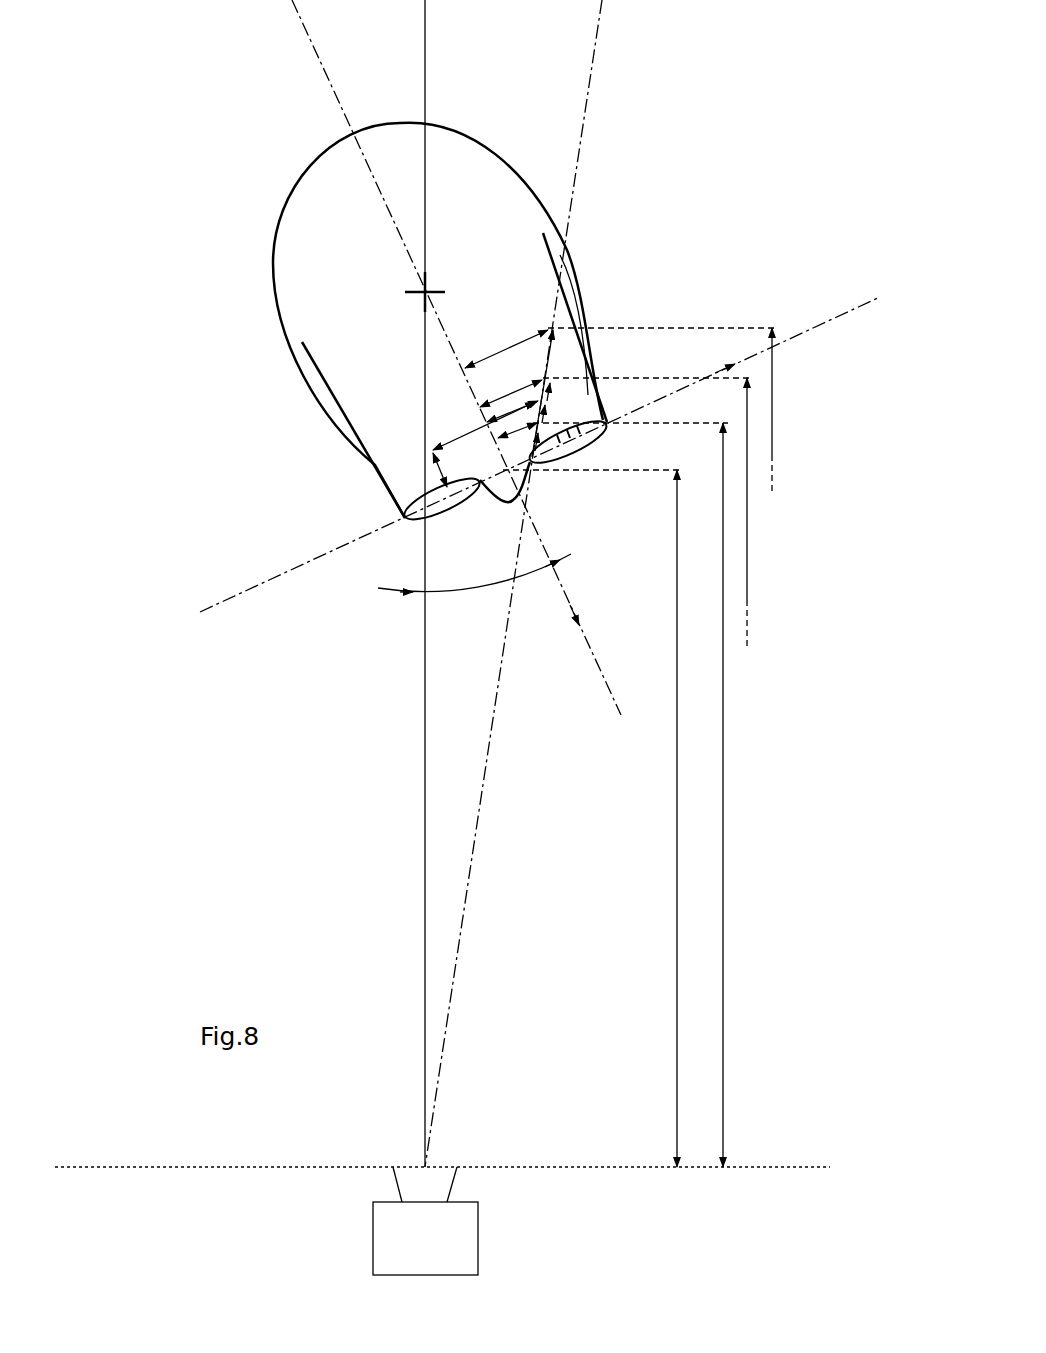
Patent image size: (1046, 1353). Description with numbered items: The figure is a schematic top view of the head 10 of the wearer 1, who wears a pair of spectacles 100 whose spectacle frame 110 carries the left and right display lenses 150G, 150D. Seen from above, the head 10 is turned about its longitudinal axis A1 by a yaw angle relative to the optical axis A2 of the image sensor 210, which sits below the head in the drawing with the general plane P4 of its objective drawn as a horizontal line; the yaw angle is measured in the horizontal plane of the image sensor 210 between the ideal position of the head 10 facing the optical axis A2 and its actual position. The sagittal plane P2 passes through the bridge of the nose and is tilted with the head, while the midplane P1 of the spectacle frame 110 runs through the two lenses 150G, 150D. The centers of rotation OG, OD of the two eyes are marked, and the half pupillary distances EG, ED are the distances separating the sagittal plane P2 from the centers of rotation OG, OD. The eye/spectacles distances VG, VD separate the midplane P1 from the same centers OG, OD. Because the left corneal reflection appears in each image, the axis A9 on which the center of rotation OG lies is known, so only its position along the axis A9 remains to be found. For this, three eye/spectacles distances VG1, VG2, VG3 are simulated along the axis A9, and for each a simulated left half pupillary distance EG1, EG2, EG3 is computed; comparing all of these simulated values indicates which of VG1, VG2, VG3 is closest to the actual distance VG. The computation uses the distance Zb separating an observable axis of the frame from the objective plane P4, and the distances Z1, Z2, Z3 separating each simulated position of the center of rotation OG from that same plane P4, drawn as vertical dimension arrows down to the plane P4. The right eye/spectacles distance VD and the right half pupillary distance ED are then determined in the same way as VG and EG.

The wearer 1 is at (690, 120).
The head 10 is at (508, 158).
The pair of spectacles 100 is at (562, 256).
The spectacle frame 110 is at (568, 293).
The image sensor 210 is at (480, 1250).
The right display lens 150D is at (412, 522).
The left display lens 150G is at (592, 432).
The midplane P1 is at (846, 316).
The sagittal plane P2 is at (318, 65).
The general plane of the objective P4 is at (798, 1168).
The longitudinal axis A1 is at (420, 295).
The optical axis A2 is at (424, 826).
The axis A9 is at (475, 828).
The center of rotation of the right eye OD is at (410, 484).
The center of rotation of the left eye OG is at (592, 330).
The right eye/spectacles distance VD is at (400, 488).
The left eye/spectacles distance VG is at (560, 450).
The first simulated eye/spectacles distance VG1 is at (600, 380).
The second simulated eye/spectacles distance VG2 is at (578, 472).
The third simulated eye/spectacles distance VG3 is at (520, 460).
The right half pupillary distance ED is at (495, 455).
The left half pupillary distance EG is at (520, 425).
The first simulated left half pupillary distance EG1 is at (520, 342).
The second simulated left half pupillary distance EG2 is at (520, 403).
The third simulated left half pupillary distance EG3 is at (430, 505).
The first simulated center distance Z1 is at (726, 912).
The second simulated center distance Z2 is at (749, 565).
The third simulated center distance Z3 is at (775, 443).
The frame axis distance Zb is at (676, 910).